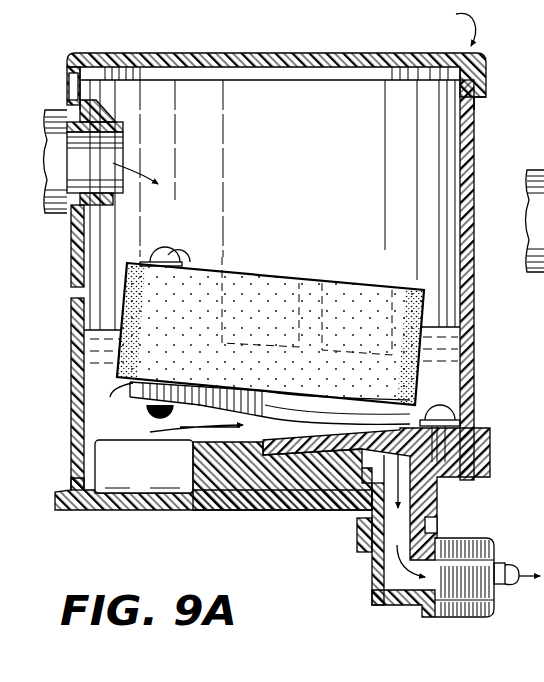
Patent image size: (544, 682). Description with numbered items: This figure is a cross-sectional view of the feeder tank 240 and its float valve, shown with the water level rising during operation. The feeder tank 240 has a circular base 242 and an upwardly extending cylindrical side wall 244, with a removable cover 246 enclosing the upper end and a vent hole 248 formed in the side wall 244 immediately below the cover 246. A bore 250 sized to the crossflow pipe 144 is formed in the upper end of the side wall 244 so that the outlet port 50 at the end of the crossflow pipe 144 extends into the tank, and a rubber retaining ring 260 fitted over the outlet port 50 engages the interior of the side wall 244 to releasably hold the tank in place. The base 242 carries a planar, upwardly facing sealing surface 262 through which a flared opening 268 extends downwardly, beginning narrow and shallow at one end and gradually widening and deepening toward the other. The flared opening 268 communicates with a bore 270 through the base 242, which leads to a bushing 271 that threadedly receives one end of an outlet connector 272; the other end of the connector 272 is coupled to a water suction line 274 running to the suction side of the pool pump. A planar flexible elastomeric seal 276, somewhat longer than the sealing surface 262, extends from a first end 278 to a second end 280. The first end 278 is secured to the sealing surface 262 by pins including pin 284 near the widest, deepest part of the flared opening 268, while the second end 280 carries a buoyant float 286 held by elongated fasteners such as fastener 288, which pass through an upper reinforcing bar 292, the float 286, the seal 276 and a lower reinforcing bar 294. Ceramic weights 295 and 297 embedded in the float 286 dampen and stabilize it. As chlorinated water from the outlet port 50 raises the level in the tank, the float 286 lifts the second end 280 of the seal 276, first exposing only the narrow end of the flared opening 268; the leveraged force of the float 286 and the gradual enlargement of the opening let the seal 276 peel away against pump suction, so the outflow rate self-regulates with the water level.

The outlet port 50 is at (122, 132).
The crossflow pipe 144 is at (47, 222).
The feeder tank 240 is at (446, 27).
The base 242 is at (193, 511).
The side wall 244 is at (474, 170).
The cover 246 is at (362, 52).
The vent hole 248 is at (477, 109).
The bore 250 is at (78, 127).
The rubber retaining ring 260 is at (112, 115).
The sealing surface 262 is at (188, 446).
The flared opening 268 is at (266, 510).
The bore 270 is at (370, 470).
The bushing 271 is at (357, 525).
The outlet connector 272 is at (452, 538).
The water suction line 274 is at (519, 558).
The flexible elastomeric seal 276 is at (316, 410).
The first end of seal 278 is at (468, 428).
The second end of seal 280 is at (170, 410).
The pin 284 is at (450, 408).
The float member 286 is at (296, 267).
The fastener pin 288 is at (172, 254).
The reinforcing bar 292 is at (140, 262).
The reinforcing bar 294 is at (178, 428).
The ceramic weight 295 is at (291, 279).
The ceramic weight 297 is at (355, 285).